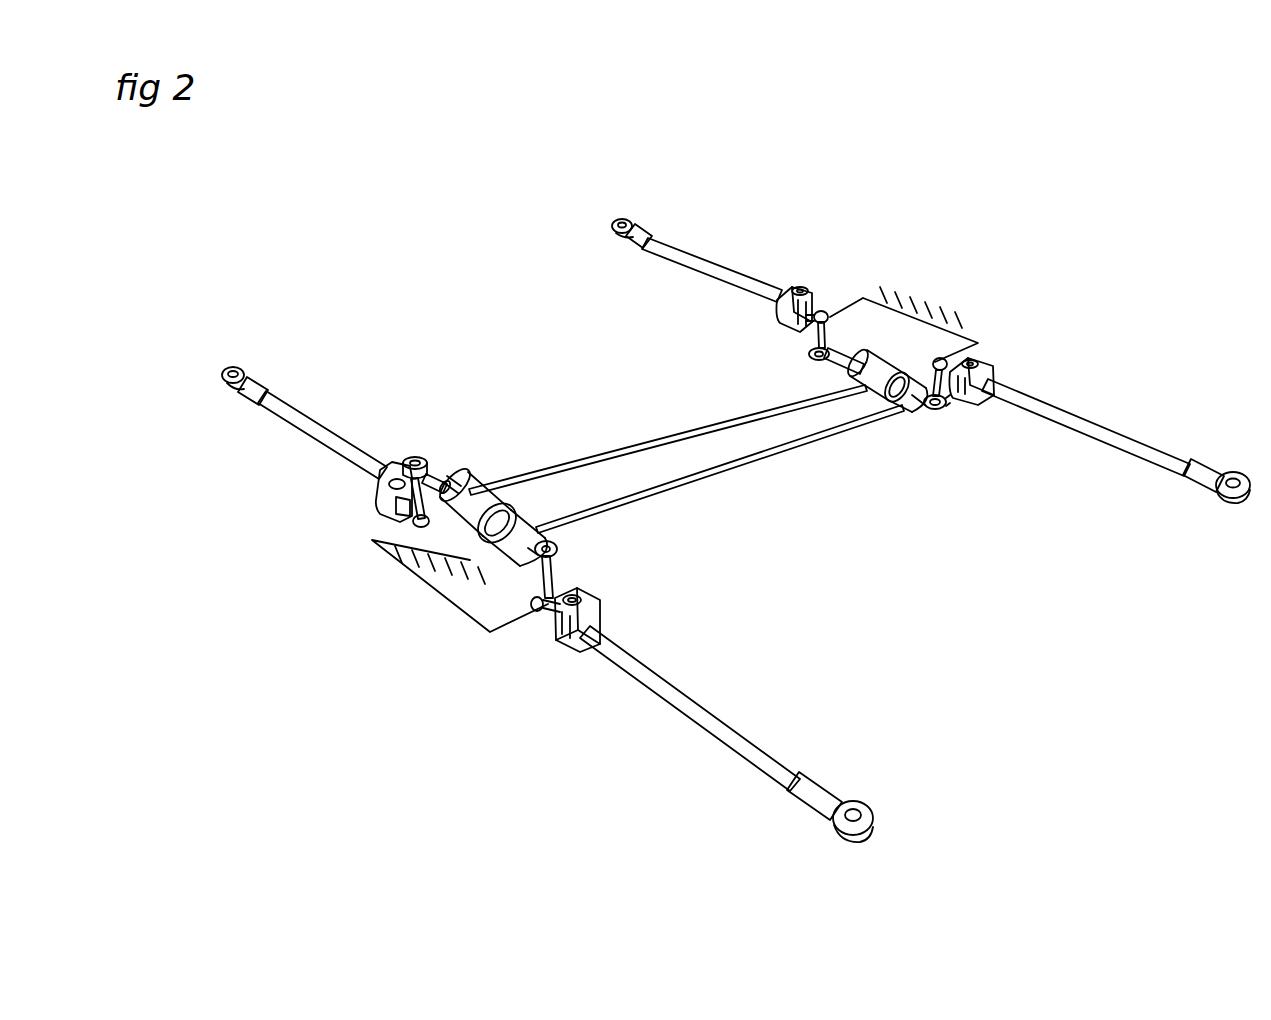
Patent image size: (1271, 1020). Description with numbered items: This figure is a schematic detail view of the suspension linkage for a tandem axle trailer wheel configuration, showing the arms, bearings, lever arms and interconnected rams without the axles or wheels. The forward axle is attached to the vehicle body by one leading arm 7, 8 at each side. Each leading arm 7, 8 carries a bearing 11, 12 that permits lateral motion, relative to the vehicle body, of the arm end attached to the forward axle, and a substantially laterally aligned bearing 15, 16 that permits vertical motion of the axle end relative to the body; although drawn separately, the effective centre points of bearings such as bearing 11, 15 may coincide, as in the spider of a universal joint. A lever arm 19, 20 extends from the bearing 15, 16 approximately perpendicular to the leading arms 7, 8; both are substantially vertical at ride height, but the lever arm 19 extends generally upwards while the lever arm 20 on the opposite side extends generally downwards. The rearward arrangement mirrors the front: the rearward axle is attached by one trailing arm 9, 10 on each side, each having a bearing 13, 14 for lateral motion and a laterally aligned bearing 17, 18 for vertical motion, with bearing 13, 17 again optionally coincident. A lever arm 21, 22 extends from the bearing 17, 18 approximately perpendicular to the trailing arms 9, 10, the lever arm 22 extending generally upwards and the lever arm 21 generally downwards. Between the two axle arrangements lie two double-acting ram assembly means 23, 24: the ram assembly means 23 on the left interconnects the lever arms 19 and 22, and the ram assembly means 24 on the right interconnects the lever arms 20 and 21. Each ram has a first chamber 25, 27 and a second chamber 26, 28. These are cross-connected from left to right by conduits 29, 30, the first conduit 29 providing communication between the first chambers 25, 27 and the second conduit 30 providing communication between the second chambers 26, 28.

The leading arm 7 is at (285, 408).
The leading arm 8 is at (690, 260).
The trailing arm 9 is at (1162, 470).
The trailing arm 10 is at (680, 690).
The bearing 11 is at (385, 502).
The bearing 12 is at (798, 286).
The bearing 13 is at (980, 360).
The bearing 14 is at (588, 606).
The laterally aligned bearing 15 is at (430, 530).
The laterally aligned bearing 16 is at (826, 313).
The laterally aligned bearing 17 is at (932, 362).
The laterally aligned bearing 18 is at (533, 613).
The lever arm 19 is at (430, 470).
The lever arm 20 is at (812, 343).
The lever arm 21 is at (952, 402).
The lever arm 22 is at (555, 576).
The ram assembly means 23 is at (498, 560).
The ram assembly means 24 is at (915, 422).
The first chamber 25 is at (485, 492).
The second chamber 26 is at (517, 522).
The first chamber 27 is at (860, 372).
The second chamber 28 is at (903, 410).
The first conduit 29 is at (650, 440).
The second conduit 30 is at (722, 478).